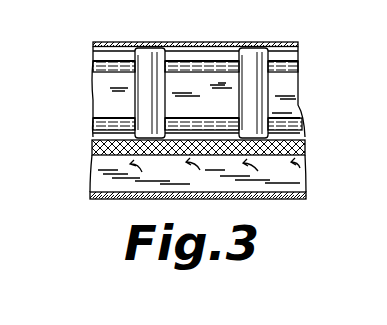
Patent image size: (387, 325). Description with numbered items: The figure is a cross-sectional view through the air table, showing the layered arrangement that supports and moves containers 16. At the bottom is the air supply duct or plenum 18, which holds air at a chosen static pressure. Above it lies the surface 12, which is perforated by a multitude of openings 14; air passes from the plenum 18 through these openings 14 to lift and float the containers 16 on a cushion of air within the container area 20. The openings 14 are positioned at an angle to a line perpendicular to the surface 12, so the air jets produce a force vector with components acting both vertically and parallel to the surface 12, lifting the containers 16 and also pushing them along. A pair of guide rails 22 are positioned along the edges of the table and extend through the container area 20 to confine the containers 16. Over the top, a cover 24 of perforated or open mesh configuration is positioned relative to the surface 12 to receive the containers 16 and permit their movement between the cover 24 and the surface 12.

The surface 12 is at (298, 135).
The openings 14 is at (95, 163).
The containers 16 is at (145, 105).
The air supply duct or plenum 18 is at (305, 184).
The container area 20 is at (197, 83).
The guide rails 22 is at (108, 70).
The cover 24 is at (236, 42).